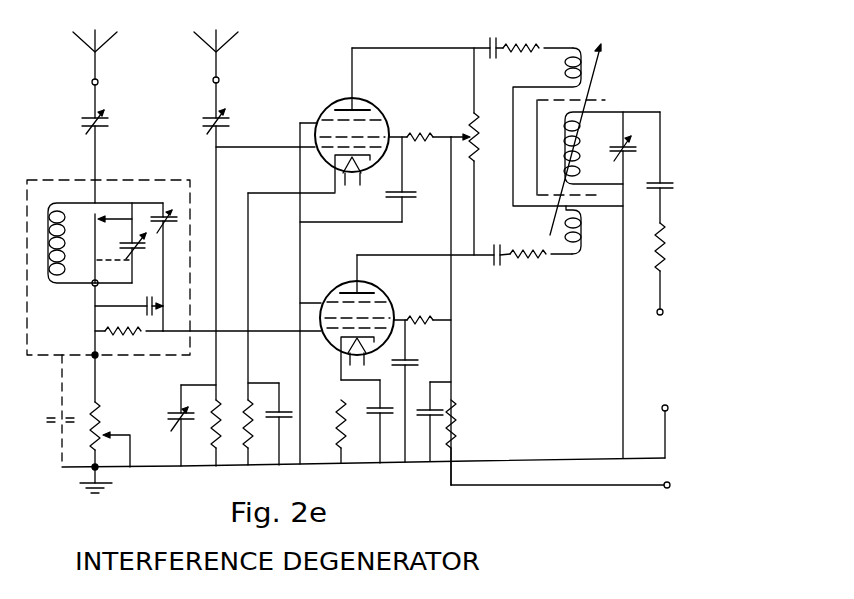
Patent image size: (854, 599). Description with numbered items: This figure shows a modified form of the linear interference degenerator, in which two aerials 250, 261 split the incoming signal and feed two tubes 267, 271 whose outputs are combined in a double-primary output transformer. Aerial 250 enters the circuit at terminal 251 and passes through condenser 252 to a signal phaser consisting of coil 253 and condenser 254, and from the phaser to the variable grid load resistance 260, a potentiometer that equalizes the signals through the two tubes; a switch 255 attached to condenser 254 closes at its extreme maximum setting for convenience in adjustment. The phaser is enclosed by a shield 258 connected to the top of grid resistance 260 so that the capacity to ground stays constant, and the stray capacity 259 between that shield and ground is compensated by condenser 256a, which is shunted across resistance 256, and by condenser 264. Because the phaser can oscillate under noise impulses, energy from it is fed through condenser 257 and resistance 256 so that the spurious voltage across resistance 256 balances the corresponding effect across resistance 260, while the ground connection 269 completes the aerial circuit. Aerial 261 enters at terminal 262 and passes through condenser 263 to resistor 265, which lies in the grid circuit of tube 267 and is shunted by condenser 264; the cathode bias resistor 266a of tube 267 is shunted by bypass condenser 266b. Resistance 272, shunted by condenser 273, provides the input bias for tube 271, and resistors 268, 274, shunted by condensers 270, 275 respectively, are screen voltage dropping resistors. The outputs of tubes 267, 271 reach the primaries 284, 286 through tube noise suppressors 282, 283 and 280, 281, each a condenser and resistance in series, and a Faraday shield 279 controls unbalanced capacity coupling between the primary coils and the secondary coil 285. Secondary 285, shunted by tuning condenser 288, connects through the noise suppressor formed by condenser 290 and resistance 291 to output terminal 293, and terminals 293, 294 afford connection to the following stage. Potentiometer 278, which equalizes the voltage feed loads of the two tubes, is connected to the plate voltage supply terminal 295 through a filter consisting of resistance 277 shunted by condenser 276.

The aerial 250 is at (77, 43).
The terminal 251 is at (90, 84).
The condenser 252 is at (86, 131).
The coil 253 is at (50, 285).
The condenser 254 is at (132, 243).
The switch 255 is at (99, 210).
The resistance 256 is at (138, 334).
The condenser 256a is at (144, 312).
The condenser 257 is at (166, 208).
The shield 258 is at (169, 357).
The stray capacity 259 is at (44, 423).
The variable grid load resistance 260 is at (96, 438).
The aerial 261 is at (204, 43).
The terminal 262 is at (211, 84).
The condenser 263 is at (208, 132).
The condenser 264 is at (179, 425).
The resistor 265 is at (214, 434).
The cathode bias resistor 266a is at (250, 440).
The bypass condenser 266b is at (282, 406).
The tube 267 is at (325, 105).
The screen voltage dropping resistor 268 is at (421, 143).
The ground connection 269 is at (94, 491).
The condenser 270 is at (416, 198).
The tube 271 is at (346, 283).
The resistance 272 is at (340, 431).
The condenser 273 is at (368, 414).
The screen voltage dropping resistor 274 is at (418, 311).
The condenser 275 is at (412, 357).
The condenser 276 is at (438, 405).
The resistance 277 is at (462, 419).
The potentiometer 278 is at (470, 122).
The Faraday shield 279 is at (596, 102).
The resistance 280 is at (541, 261).
The condenser 281 is at (492, 265).
The resistance 282 is at (515, 43).
The condenser 283 is at (484, 43).
The primary coil 284 is at (567, 63).
The secondary coil 285 is at (581, 144).
The primary coil 286 is at (587, 242).
The tuning condenser 288 is at (633, 285).
The condenser 290 is at (669, 178).
The resistance 291 is at (670, 240).
The output terminal 293 is at (670, 308).
The terminal 294 is at (672, 402).
The plate voltage supply terminal 295 is at (672, 475).